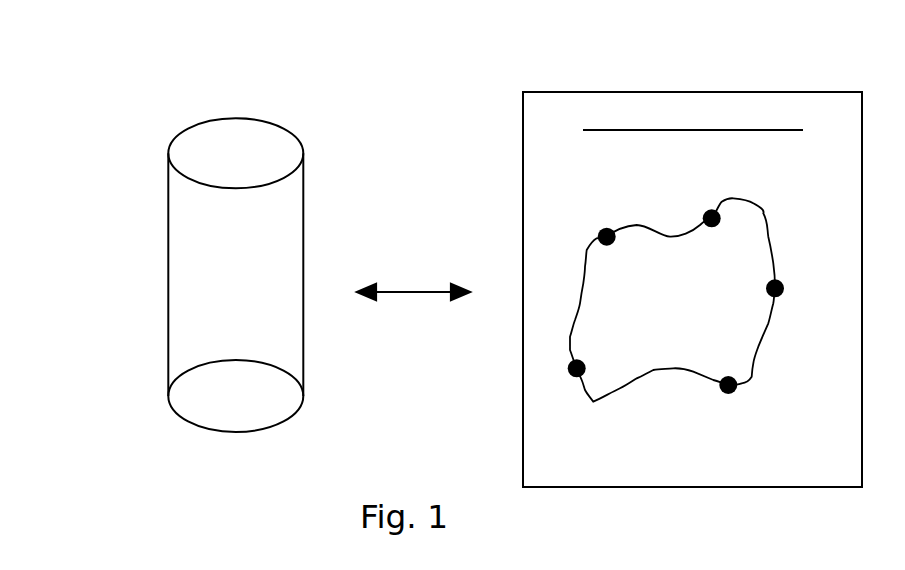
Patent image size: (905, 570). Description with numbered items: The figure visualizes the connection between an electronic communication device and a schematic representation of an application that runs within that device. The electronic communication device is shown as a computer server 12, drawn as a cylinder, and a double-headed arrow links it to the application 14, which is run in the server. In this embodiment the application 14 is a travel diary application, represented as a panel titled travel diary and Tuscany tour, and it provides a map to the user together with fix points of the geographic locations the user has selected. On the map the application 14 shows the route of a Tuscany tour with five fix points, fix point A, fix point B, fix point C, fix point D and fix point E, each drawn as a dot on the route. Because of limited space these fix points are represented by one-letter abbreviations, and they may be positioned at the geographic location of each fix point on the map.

The computer server 12 is at (168, 282).
The application 14 is at (692, 252).
The fix point A is at (586, 231).
The fix point B is at (713, 200).
The fix point C is at (787, 278).
The fix point D is at (747, 393).
The fix point E is at (560, 374).